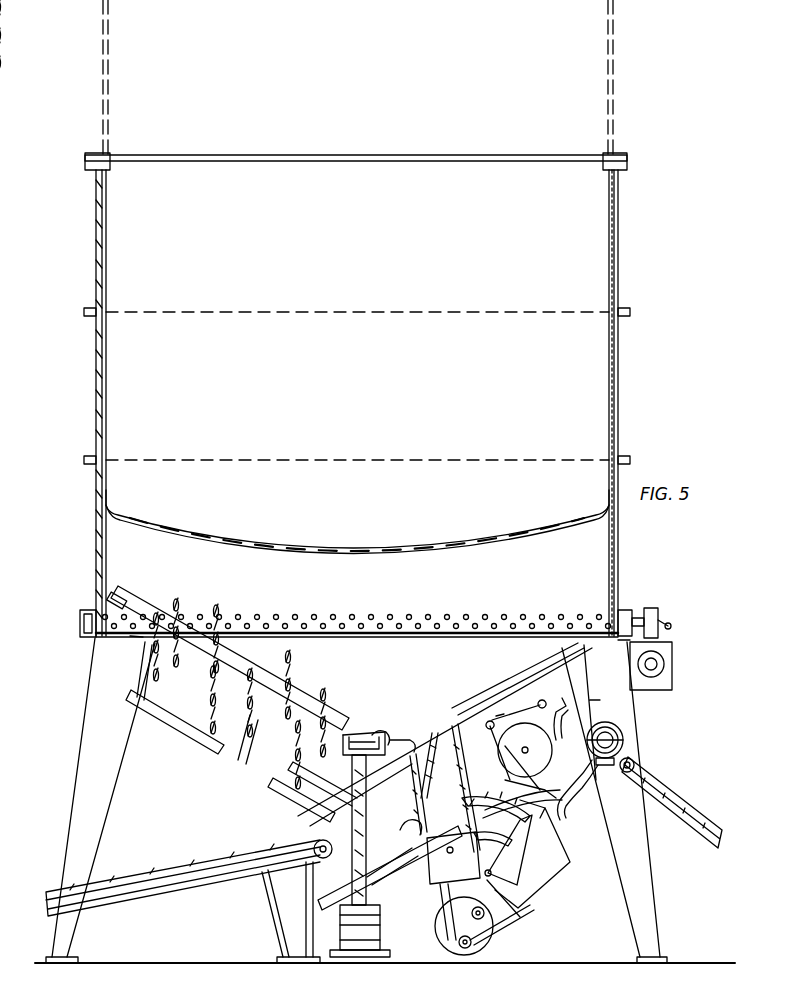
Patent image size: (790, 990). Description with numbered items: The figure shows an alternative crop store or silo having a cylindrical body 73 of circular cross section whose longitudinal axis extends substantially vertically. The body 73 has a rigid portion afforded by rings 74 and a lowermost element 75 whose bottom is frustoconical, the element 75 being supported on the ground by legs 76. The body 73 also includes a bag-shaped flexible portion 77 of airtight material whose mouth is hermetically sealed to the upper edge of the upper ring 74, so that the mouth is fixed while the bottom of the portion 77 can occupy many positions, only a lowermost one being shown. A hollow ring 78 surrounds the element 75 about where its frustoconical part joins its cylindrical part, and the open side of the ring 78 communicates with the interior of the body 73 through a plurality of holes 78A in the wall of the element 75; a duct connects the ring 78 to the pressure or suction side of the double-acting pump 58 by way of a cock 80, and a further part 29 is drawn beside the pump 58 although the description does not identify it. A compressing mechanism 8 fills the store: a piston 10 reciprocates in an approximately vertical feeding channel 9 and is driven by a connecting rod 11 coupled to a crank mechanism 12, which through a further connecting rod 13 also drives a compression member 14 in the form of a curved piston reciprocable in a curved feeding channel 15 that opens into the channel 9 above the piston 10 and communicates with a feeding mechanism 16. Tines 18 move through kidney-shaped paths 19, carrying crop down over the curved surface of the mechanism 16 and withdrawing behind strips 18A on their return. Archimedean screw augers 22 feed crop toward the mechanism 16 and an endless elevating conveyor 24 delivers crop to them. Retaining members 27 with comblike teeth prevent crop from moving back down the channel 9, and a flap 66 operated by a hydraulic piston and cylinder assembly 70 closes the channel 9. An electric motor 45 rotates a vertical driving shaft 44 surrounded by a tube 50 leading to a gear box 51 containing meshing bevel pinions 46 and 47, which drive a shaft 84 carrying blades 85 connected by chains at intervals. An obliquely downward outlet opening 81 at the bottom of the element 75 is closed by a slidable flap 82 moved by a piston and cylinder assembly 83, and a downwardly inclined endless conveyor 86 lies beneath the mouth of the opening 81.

The compressing mechanism 8 is at (556, 886).
The feeding channel 9 is at (404, 794).
The piston 10 is at (444, 862).
The connecting rod 11 is at (436, 890).
The crank mechanism 12 is at (480, 940).
The connecting rod 13 is at (515, 903).
The compression member 14 is at (499, 827).
The curved feeding channel 15 is at (560, 847).
The feeding mechanism 16 is at (540, 792).
The tines 18 is at (503, 760).
The strips 18A is at (568, 709).
The paths 19 is at (588, 722).
The Archimedean screw augers 22 is at (624, 740).
The endless elevating conveyor 24 is at (692, 800).
The retaining members 27 is at (440, 740).
The bracket 29 is at (638, 612).
The driving shaft 44 is at (352, 794).
The electric motor 45 is at (372, 940).
The bevel pinion 46 is at (348, 758).
The bevel pinion 47 is at (380, 740).
The tube 50 is at (360, 860).
The gear box 51 is at (406, 734).
The double-acting pump 58 is at (662, 662).
The flap 66 is at (422, 820).
The hydraulic piston and cylinder assembly 70 is at (392, 876).
The cylindrical body 73 is at (622, 540).
The rings 74 is at (620, 226).
The lowermost element 75 is at (138, 660).
The legs 76 is at (80, 804).
The flexible portion 77 is at (610, 78).
The hollow ring 78 is at (82, 612).
The holes 78A is at (402, 612).
The cock 80 is at (660, 626).
The outlet opening 81 is at (290, 774).
The slidable flap 82 is at (282, 806).
The piston and cylinder assembly 83 is at (180, 736).
The shaft 84 is at (123, 612).
The blades 85 is at (215, 612).
The endless conveyor 86 is at (185, 872).